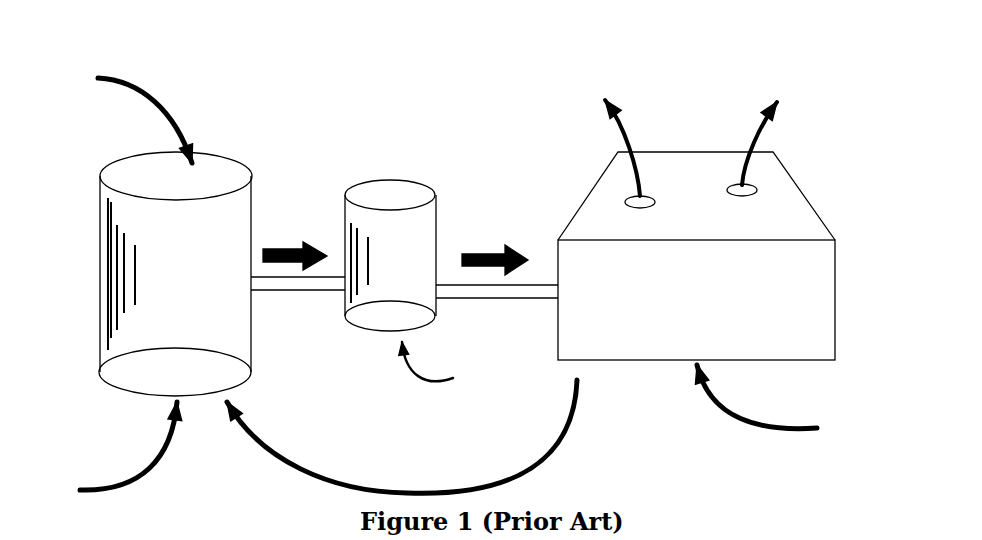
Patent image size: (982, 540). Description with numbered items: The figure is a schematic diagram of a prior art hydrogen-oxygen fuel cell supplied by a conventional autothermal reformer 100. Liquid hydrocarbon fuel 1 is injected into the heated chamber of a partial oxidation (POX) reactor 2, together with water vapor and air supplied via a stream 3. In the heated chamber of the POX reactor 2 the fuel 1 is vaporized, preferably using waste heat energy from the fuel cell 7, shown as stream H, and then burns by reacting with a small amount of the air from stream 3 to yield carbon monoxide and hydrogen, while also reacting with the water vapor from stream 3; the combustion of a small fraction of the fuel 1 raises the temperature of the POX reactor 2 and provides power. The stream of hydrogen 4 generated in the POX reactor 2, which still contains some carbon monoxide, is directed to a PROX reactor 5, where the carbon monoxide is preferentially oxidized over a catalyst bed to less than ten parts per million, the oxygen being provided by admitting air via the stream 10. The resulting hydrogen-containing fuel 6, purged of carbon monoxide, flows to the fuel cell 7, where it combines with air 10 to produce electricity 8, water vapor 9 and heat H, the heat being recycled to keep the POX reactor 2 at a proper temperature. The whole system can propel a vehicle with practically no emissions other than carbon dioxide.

The liquid hydrocarbon fuel 1 is at (116, 452).
The partial oxidation (POX) reactor 2 is at (213, 310).
The stream 3 is at (126, 113).
The stream of hydrogen 4 is at (295, 239).
The PROX reactor 5 is at (383, 230).
The hydrogen-containing fuel 6 is at (495, 241).
The fuel cell 7 is at (805, 270).
The electricity 8 is at (625, 130).
The water vapor 9 is at (765, 120).
The air 10 is at (637, 394).
The autothermal reformer 100 is at (437, 147).
The heat H is at (402, 436).